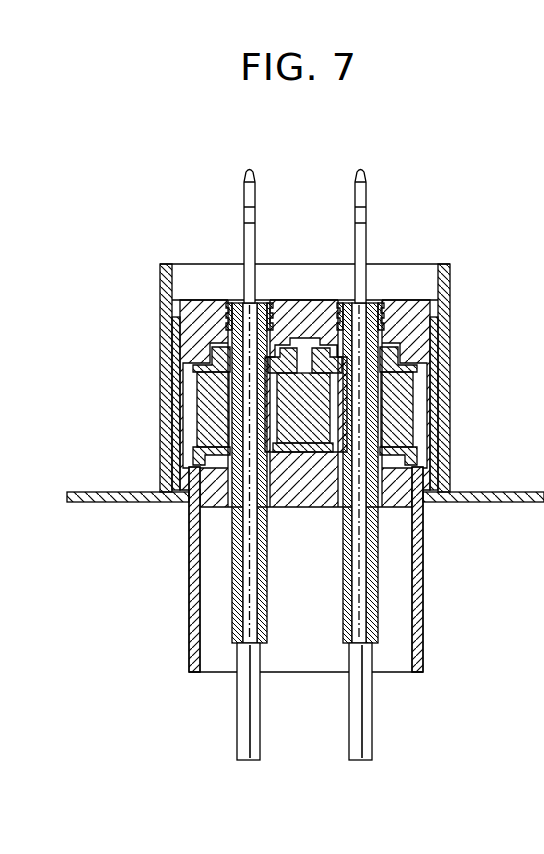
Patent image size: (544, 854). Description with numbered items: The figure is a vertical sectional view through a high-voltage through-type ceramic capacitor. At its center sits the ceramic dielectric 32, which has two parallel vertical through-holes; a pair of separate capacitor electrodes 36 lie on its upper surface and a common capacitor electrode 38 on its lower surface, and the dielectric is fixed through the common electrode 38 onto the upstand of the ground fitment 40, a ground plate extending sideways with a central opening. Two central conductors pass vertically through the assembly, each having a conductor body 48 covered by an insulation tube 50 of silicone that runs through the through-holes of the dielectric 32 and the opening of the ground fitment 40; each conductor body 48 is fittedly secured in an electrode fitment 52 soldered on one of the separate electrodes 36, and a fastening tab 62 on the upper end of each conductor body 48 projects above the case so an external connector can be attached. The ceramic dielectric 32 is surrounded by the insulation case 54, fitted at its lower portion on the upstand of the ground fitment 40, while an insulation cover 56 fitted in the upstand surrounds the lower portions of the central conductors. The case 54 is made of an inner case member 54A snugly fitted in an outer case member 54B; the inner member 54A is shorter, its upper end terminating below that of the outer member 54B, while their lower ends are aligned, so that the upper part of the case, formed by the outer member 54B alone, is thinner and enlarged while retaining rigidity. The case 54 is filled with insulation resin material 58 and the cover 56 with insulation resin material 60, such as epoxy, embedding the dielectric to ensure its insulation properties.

The ceramic dielectric 32 is at (197, 408).
The capacitor electrodes 36 is at (192, 383).
The common capacitor electrode 38 is at (193, 440).
The ground fitment 40 is at (140, 503).
The conductor body 48 is at (260, 723).
The insulation tube 50 is at (267, 605).
The electrode fitment 52 is at (275, 318).
The insulation case 54 is at (305, 374).
The inner case member 54A is at (440, 328).
The outer case member 54B is at (450, 283).
The insulation cover 56 is at (423, 575).
The insulation resin material 58 is at (335, 312).
The insulation resin material 60 is at (380, 536).
The fastening tab 62 is at (256, 190).